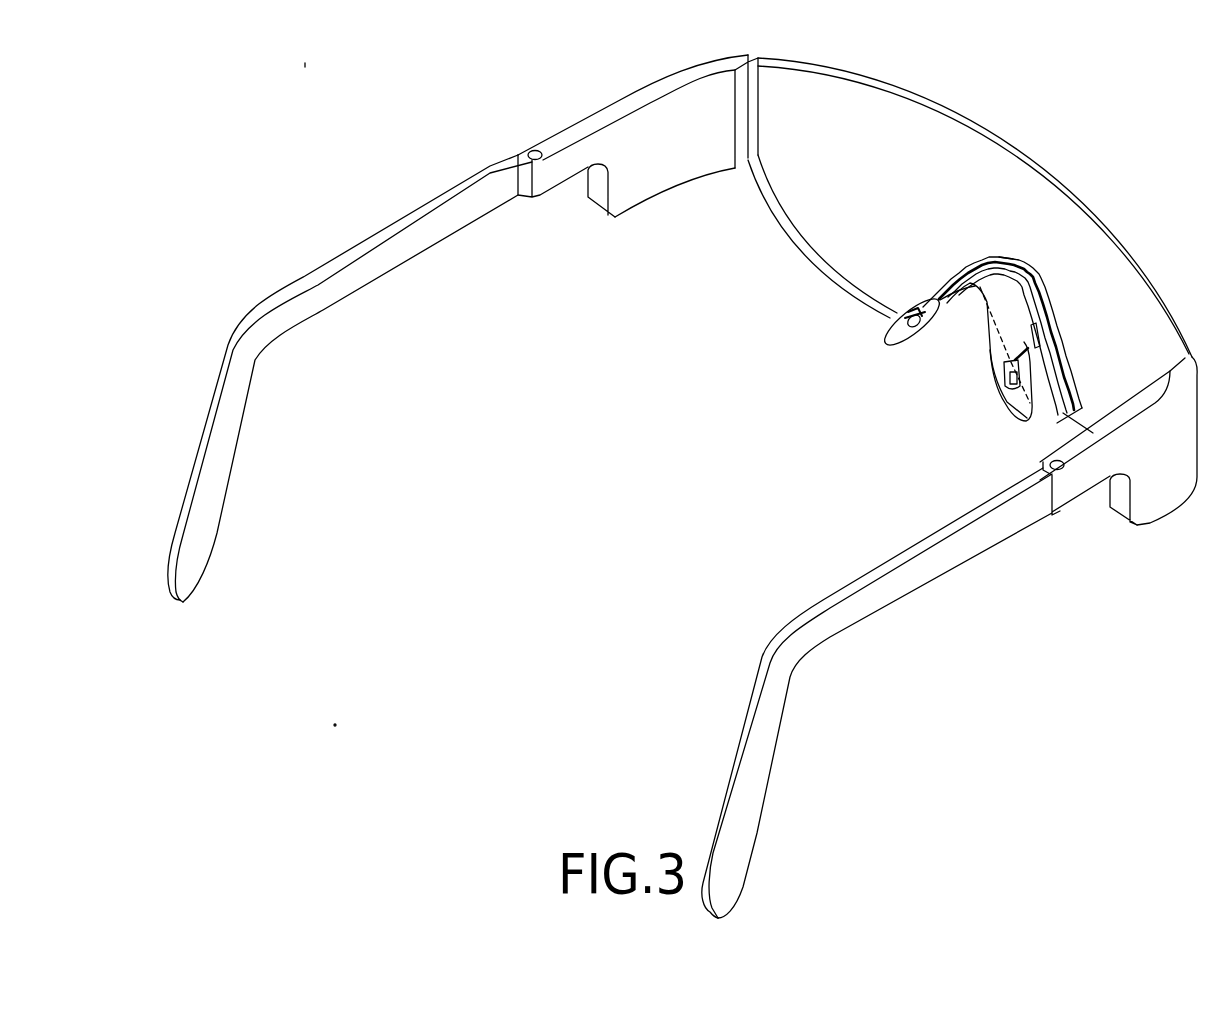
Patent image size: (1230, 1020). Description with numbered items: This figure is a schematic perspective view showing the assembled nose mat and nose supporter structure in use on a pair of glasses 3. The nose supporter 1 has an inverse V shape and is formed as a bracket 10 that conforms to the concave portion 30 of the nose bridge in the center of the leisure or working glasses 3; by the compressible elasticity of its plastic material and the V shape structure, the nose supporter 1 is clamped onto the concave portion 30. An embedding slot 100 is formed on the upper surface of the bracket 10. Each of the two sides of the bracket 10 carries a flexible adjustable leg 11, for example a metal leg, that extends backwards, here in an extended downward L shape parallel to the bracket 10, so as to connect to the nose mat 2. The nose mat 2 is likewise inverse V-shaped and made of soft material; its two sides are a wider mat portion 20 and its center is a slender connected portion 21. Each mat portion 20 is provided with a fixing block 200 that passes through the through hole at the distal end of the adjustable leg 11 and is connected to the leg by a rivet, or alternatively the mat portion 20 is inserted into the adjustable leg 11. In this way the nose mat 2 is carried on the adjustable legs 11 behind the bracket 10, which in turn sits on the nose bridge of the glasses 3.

The nose supporter 1 is at (1059, 297).
The bracket 10 is at (1035, 305).
The embedding slot 100 is at (1027, 320).
The nose mat 2 is at (911, 349).
The mat portion 20 is at (890, 333).
The fixing block 200 is at (900, 347).
The connected portion 21 is at (963, 321).
The adjustable leg 11 is at (918, 307).
The glasses 3 is at (958, 152).
The concave portion 30 is at (1010, 267).